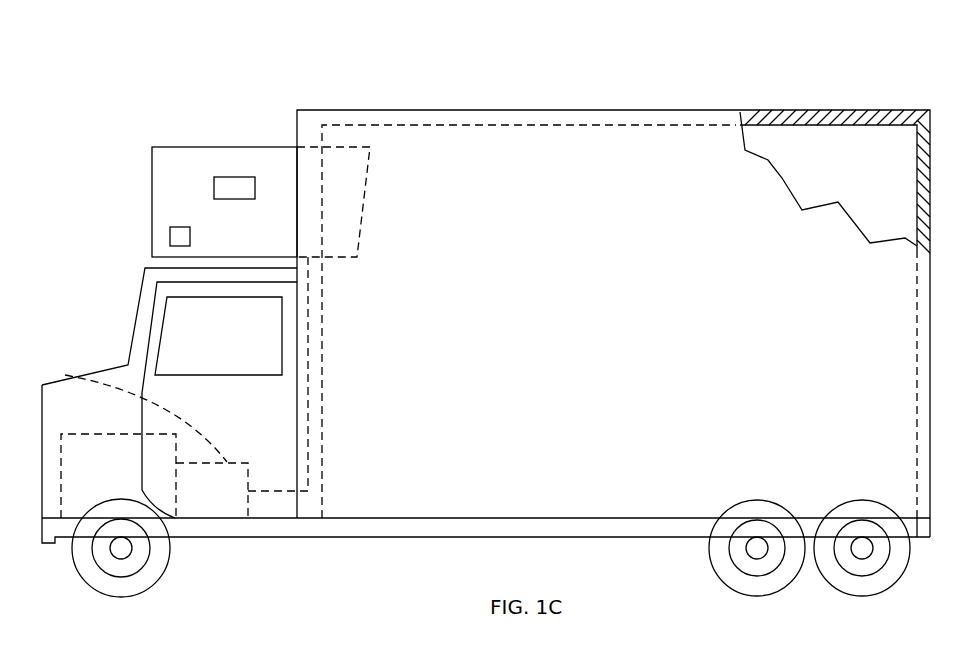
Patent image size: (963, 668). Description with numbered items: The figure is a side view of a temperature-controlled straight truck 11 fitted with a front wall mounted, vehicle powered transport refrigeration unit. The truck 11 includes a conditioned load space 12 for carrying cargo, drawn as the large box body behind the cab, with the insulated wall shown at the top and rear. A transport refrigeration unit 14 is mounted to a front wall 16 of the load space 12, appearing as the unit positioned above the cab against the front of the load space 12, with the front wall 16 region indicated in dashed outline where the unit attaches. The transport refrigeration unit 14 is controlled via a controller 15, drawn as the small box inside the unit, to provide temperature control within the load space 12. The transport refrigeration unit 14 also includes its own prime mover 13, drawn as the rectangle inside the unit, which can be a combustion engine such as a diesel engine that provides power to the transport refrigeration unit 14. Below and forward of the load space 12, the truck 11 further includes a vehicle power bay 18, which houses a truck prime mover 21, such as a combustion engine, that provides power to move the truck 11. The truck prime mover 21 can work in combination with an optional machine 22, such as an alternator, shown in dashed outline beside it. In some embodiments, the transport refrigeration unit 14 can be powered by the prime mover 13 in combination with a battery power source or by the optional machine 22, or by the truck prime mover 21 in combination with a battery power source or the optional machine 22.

The temperature-controlled straight truck 11 is at (658, 82).
The conditioned load space 12 is at (798, 147).
The prime mover 13 is at (231, 177).
The transport refrigeration unit 14 is at (207, 146).
The controller 15 is at (170, 232).
The front wall 16 is at (324, 160).
The vehicle power bay 18 is at (107, 370).
The truck prime mover 21 is at (82, 433).
The optional machine 22 is at (65, 375).